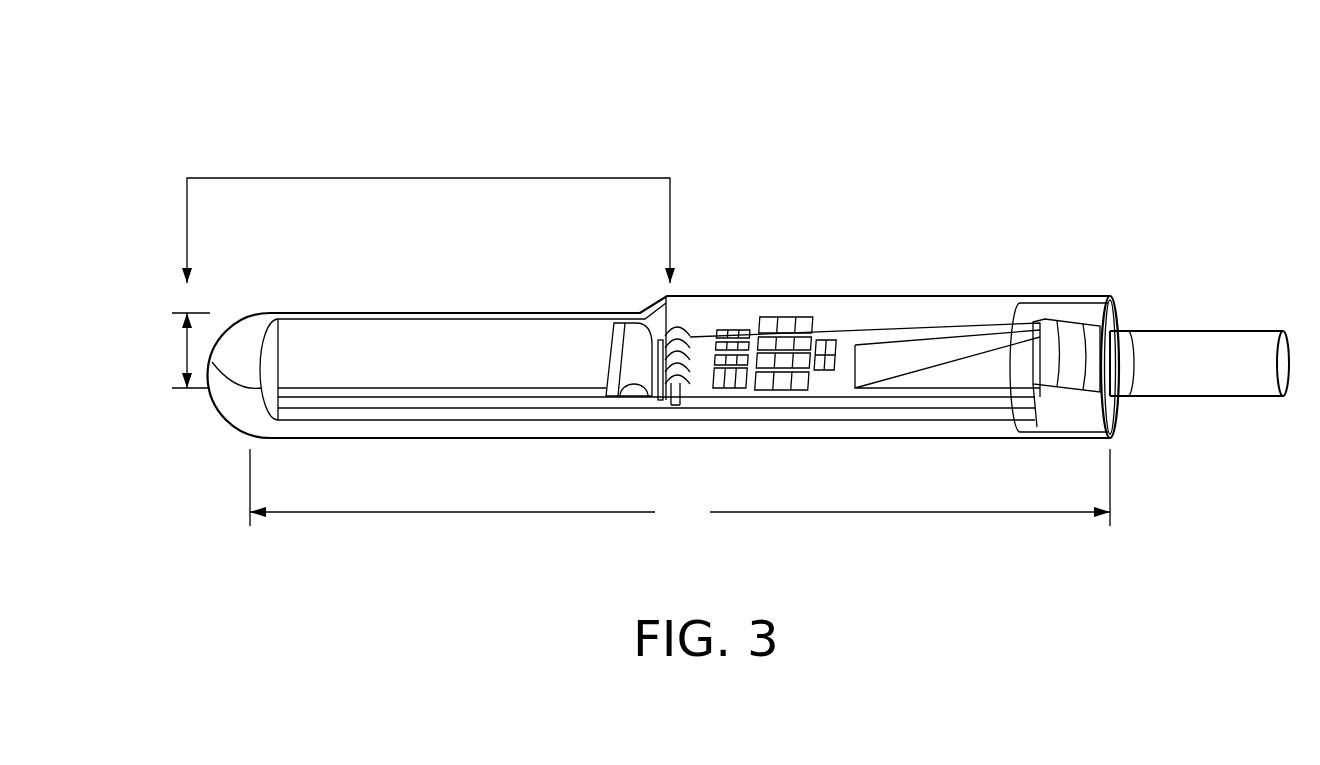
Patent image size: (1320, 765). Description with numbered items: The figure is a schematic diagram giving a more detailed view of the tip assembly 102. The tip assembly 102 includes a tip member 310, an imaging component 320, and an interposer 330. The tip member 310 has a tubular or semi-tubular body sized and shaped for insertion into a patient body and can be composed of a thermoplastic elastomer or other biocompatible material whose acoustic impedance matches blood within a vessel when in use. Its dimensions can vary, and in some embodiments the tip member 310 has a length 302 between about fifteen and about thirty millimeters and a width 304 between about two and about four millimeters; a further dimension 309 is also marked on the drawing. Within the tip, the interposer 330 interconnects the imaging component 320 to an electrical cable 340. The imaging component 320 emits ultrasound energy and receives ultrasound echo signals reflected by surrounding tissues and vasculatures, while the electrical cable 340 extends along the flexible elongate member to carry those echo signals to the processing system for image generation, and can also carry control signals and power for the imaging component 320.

The tip assembly 102 is at (1227, 101).
The length 302 is at (680, 487).
The width 304 is at (187, 353).
The length of battery compartment 309 is at (417, 178).
The tip member 310 is at (406, 313).
The imaging component 320 is at (434, 351).
The interposer 330 is at (850, 332).
The electrical cable 340 is at (1234, 324).